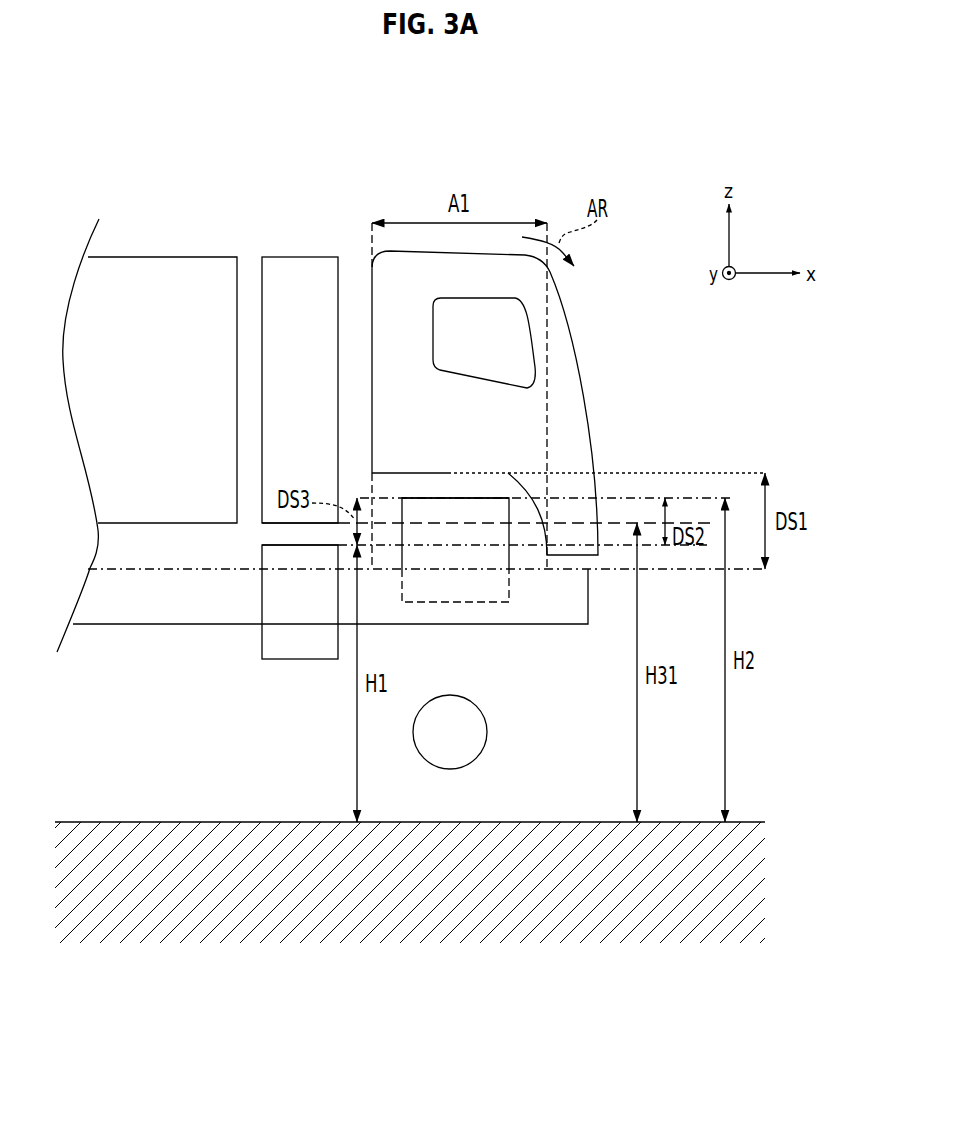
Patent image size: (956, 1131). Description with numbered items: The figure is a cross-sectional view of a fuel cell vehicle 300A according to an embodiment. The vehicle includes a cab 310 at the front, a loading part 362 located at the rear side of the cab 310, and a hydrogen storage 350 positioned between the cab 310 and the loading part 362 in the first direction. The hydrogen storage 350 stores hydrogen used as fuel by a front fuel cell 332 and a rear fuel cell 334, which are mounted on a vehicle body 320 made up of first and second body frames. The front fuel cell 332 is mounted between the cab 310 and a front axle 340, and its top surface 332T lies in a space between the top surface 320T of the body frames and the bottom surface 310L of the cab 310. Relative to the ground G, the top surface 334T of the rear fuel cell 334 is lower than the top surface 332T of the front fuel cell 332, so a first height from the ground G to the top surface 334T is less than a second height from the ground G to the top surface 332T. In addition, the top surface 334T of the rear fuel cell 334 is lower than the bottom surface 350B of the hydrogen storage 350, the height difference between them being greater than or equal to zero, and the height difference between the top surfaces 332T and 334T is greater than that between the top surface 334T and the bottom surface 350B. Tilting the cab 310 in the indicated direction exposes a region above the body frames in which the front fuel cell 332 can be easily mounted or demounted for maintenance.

The fuel cell vehicle 300A is at (668, 162).
The cab 310 is at (560, 346).
The bottom surface of the cab 310L is at (448, 473).
The vehicle body 320 is at (98, 618).
The top surface of the body frames 320T is at (143, 569).
The front fuel cell 332 is at (455, 620).
The top surface of the front fuel cell 332T is at (480, 498).
The rear fuel cell 334 is at (281, 647).
The top surface of the rear fuel cell 334T is at (313, 545).
The front axle 340 is at (450, 769).
The hydrogen storage 350 is at (298, 263).
The bottom surface of the hydrogen storage 350B is at (277, 523).
The loading part 362 is at (184, 264).
The ground G is at (122, 820).